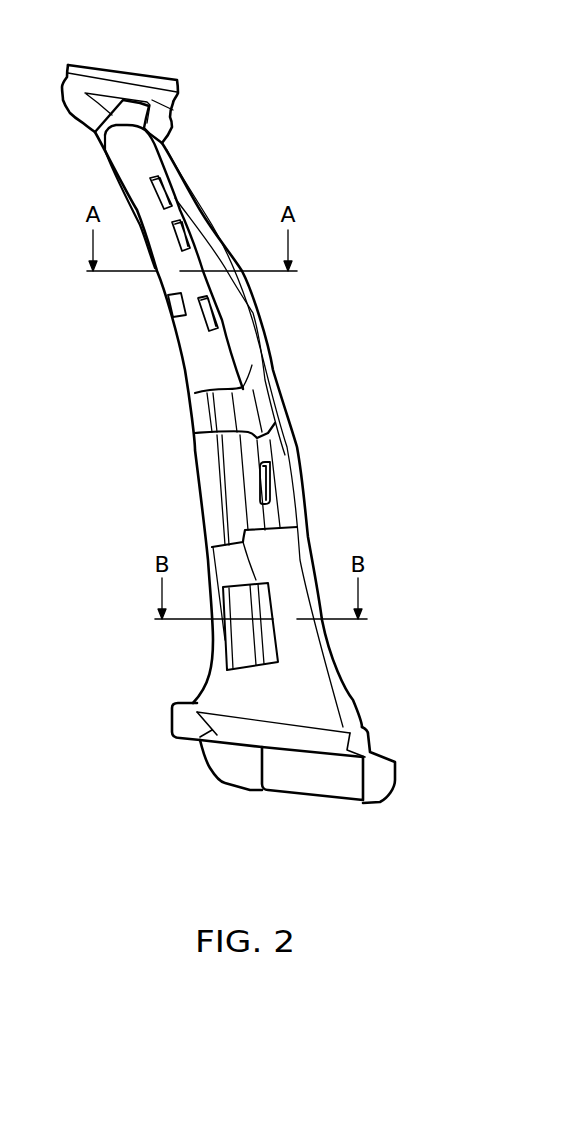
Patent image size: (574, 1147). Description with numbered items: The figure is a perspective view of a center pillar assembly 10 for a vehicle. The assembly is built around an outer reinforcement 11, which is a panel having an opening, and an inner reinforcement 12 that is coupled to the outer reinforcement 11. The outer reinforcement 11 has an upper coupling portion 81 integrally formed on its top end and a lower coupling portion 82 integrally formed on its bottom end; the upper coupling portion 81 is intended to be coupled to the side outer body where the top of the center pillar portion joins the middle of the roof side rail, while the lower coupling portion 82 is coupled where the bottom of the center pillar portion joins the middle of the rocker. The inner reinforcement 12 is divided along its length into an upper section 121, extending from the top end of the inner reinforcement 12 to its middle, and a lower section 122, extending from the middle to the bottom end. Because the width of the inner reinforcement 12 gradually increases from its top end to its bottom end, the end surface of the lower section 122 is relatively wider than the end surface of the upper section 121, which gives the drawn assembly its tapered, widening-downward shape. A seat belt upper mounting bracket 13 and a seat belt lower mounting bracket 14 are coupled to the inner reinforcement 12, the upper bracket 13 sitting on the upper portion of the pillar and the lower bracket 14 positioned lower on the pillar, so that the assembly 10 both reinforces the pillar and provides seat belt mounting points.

The center pillar assembly 10 is at (184, 439).
The outer reinforcement 11 is at (292, 452).
The inner reinforcement 12 is at (312, 429).
The upper section 121 is at (233, 313).
The lower section 122 is at (280, 490).
The seat belt upper mounting bracket 13 is at (166, 284).
The seat belt lower mounting bracket 14 is at (307, 673).
The upper coupling portion 81 is at (145, 82).
The lower coupling portion 82 is at (240, 773).